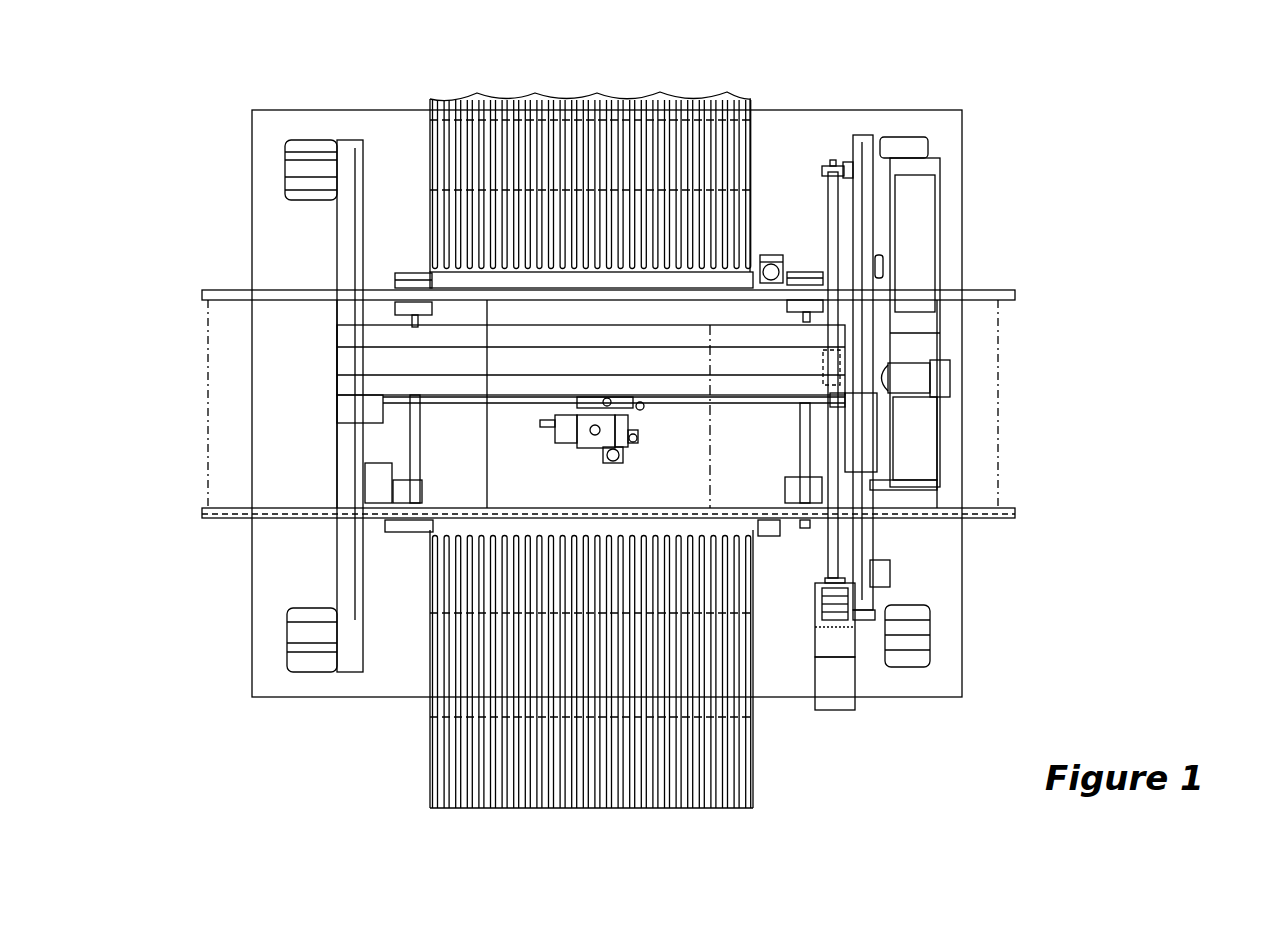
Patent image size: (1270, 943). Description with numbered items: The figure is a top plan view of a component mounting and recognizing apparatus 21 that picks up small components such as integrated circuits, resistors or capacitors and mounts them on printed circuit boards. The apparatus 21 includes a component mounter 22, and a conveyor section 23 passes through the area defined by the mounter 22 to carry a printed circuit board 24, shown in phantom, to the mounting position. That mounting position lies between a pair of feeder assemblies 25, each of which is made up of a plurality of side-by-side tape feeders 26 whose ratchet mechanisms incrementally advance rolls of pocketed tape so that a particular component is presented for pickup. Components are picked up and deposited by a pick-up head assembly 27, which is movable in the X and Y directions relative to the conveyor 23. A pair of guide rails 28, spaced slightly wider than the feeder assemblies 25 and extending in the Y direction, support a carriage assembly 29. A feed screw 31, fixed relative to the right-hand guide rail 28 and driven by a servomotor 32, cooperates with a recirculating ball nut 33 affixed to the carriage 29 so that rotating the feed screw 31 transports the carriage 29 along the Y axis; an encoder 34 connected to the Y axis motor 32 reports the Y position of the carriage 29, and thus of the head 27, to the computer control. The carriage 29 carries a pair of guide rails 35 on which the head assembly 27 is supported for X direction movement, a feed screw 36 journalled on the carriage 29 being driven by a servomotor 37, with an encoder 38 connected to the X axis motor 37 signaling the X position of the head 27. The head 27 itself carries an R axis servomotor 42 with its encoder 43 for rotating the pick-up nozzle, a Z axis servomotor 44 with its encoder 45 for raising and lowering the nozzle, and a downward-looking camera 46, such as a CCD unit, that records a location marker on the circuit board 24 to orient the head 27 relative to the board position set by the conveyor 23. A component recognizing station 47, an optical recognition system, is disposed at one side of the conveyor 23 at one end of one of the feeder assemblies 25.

The component mounting and recognizing apparatus 21 is at (1008, 188).
The component mounter 22 is at (895, 108).
The conveyor section 23 is at (1000, 283).
The printed circuit board 24 is at (483, 441).
The feeder assembly 25 is at (410, 127).
The tape feeder 26 is at (425, 175).
The pick-up head assembly 27 is at (590, 466).
The guide rail 28 is at (368, 245).
The carriage assembly 29 is at (347, 310).
The feed screw 31 is at (826, 195).
The servomotor 32 is at (827, 648).
The recirculating ball nut 33 is at (822, 357).
The encoder 34 is at (856, 700).
The guide rail 35 is at (742, 396).
The feed screw 36 is at (513, 403).
The servomotor 37 is at (898, 395).
The encoder 38 is at (943, 362).
The R axis servomotor 42 is at (614, 464).
The encoder 43 is at (651, 475).
The Z axis servomotor 44 is at (565, 429).
The encoder 45 is at (555, 420).
The camera 46 is at (637, 443).
The component recognizing station 47 is at (775, 248).